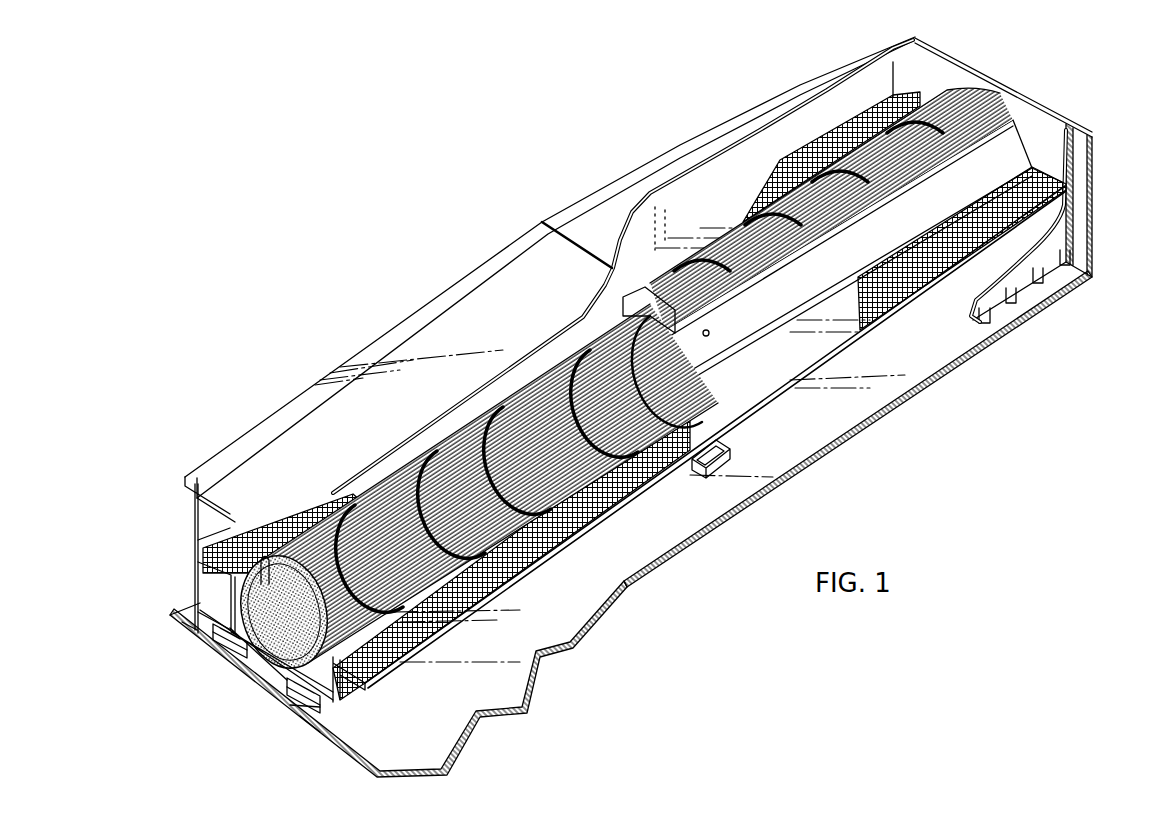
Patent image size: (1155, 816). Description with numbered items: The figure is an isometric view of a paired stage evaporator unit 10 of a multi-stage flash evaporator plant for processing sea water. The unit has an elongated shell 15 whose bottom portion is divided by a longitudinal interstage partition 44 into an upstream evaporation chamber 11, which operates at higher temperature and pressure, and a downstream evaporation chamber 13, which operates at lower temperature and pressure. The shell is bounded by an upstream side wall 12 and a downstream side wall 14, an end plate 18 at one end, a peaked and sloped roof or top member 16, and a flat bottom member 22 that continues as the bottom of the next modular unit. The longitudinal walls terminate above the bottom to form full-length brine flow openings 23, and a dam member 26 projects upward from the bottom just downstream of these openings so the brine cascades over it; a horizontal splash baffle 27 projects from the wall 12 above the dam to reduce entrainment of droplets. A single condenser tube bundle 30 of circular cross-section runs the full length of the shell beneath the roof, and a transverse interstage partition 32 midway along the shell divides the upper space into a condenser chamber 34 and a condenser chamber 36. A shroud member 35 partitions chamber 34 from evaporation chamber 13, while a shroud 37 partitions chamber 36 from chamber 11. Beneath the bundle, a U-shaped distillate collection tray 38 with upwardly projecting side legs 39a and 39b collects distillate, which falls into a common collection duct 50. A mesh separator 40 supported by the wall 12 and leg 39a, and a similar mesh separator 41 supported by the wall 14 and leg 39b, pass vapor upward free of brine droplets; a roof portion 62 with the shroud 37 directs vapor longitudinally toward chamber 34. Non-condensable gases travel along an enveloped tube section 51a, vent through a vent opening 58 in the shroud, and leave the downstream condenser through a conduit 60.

The paired stage evaporator unit 10 is at (623, 408).
The upstream evaporation chamber 11 is at (270, 664).
The upstream side wall 12 is at (197, 585).
The downstream evaporation chamber 13 is at (358, 747).
The downstream side wall 14 is at (1065, 230).
The elongated shell 15 is at (313, 415).
The roof or top member 16 is at (530, 261).
The end wall or plate 18 is at (1052, 110).
The flat bottom member 22 is at (660, 556).
The brine flow openings 23 is at (1063, 267).
The dam member 26 is at (268, 722).
The horizontal splash baffle 27 is at (182, 622).
The condenser tube bundle 30 is at (603, 437).
The transverse interstage partition 32 is at (702, 370).
The condenser chamber 34 is at (948, 78).
The shroud member 35 is at (1007, 150).
The condenser chamber 36 is at (588, 496).
The shroud 37 is at (337, 496).
The distillate collection tray 38 is at (366, 683).
The side leg 39a is at (170, 616).
The side leg 39b is at (305, 722).
The mesh separator 40 is at (205, 538).
The mesh separator 41 is at (437, 626).
The longitudinal interstage evaporation stage partition 44 is at (287, 682).
The common collection duct 50 is at (730, 450).
The enveloped tube section 51a is at (233, 586).
The vent opening 58 is at (709, 332).
The conduit 60 is at (245, 520).
The roof portion 62 is at (423, 377).